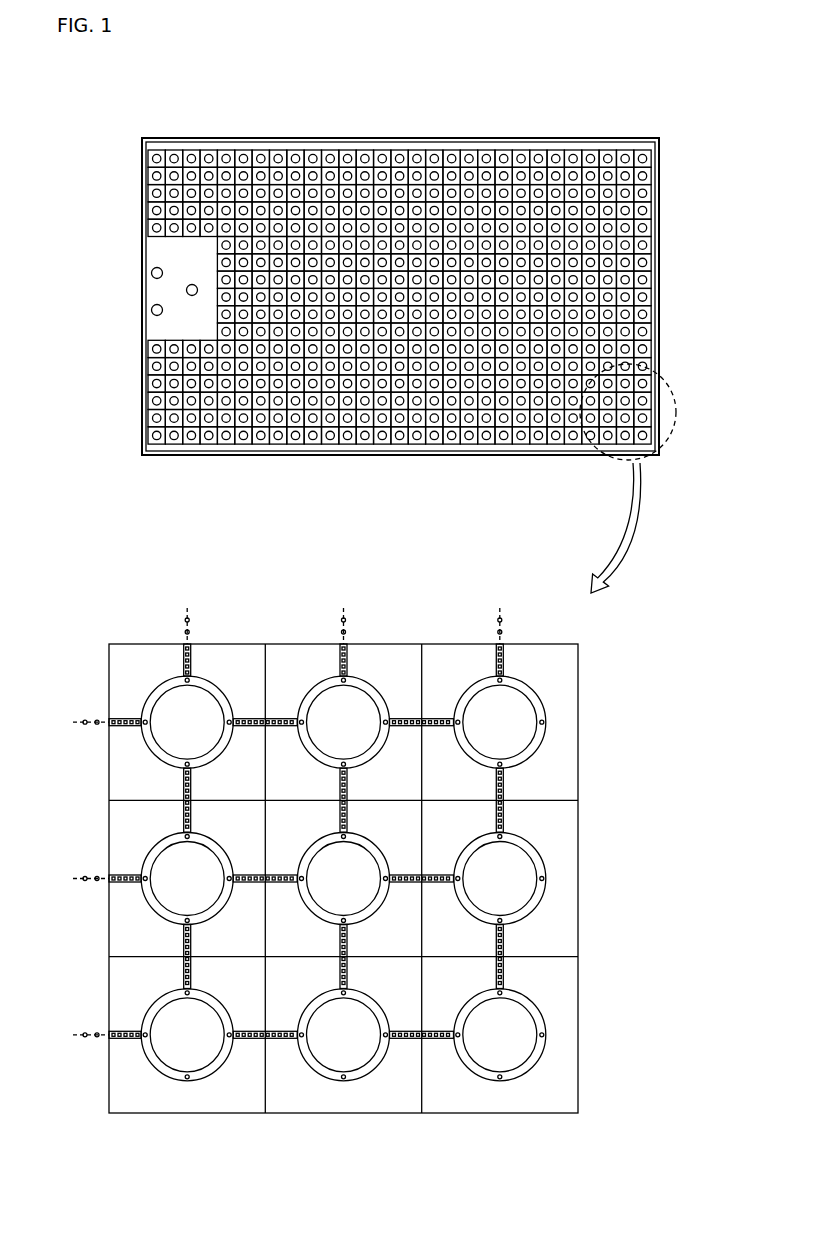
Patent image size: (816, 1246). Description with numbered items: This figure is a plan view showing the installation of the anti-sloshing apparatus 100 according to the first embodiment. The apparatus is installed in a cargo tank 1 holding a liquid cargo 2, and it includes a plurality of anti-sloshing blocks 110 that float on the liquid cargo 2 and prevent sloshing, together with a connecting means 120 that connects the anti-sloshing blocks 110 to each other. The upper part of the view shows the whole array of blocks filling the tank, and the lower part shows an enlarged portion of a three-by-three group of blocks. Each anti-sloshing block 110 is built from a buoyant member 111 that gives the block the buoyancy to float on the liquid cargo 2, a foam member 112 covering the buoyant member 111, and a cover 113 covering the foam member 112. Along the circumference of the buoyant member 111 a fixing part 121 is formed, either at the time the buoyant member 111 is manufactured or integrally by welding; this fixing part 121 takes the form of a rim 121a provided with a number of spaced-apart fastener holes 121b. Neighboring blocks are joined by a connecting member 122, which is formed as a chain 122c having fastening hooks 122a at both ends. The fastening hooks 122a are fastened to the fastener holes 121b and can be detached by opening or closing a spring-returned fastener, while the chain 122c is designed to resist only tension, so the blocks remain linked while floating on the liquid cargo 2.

The cargo tank 1 is at (551, 137).
The liquid cargo 2 is at (150, 291).
The anti-sloshing apparatus 100 is at (434, 146).
The anti-sloshing block 110 is at (401, 878).
The buoyant member 111 is at (525, 892).
The foam member 112 is at (563, 917).
The cover 113 is at (578, 937).
The connecting means 120 is at (410, 823).
The fixing part 121 is at (388, 879).
The rim 121a is at (525, 848).
The fastener holes 121b is at (505, 838).
The connecting member 122 is at (443, 798).
The fastening hook 122a is at (503, 822).
The chain 122c is at (507, 782).